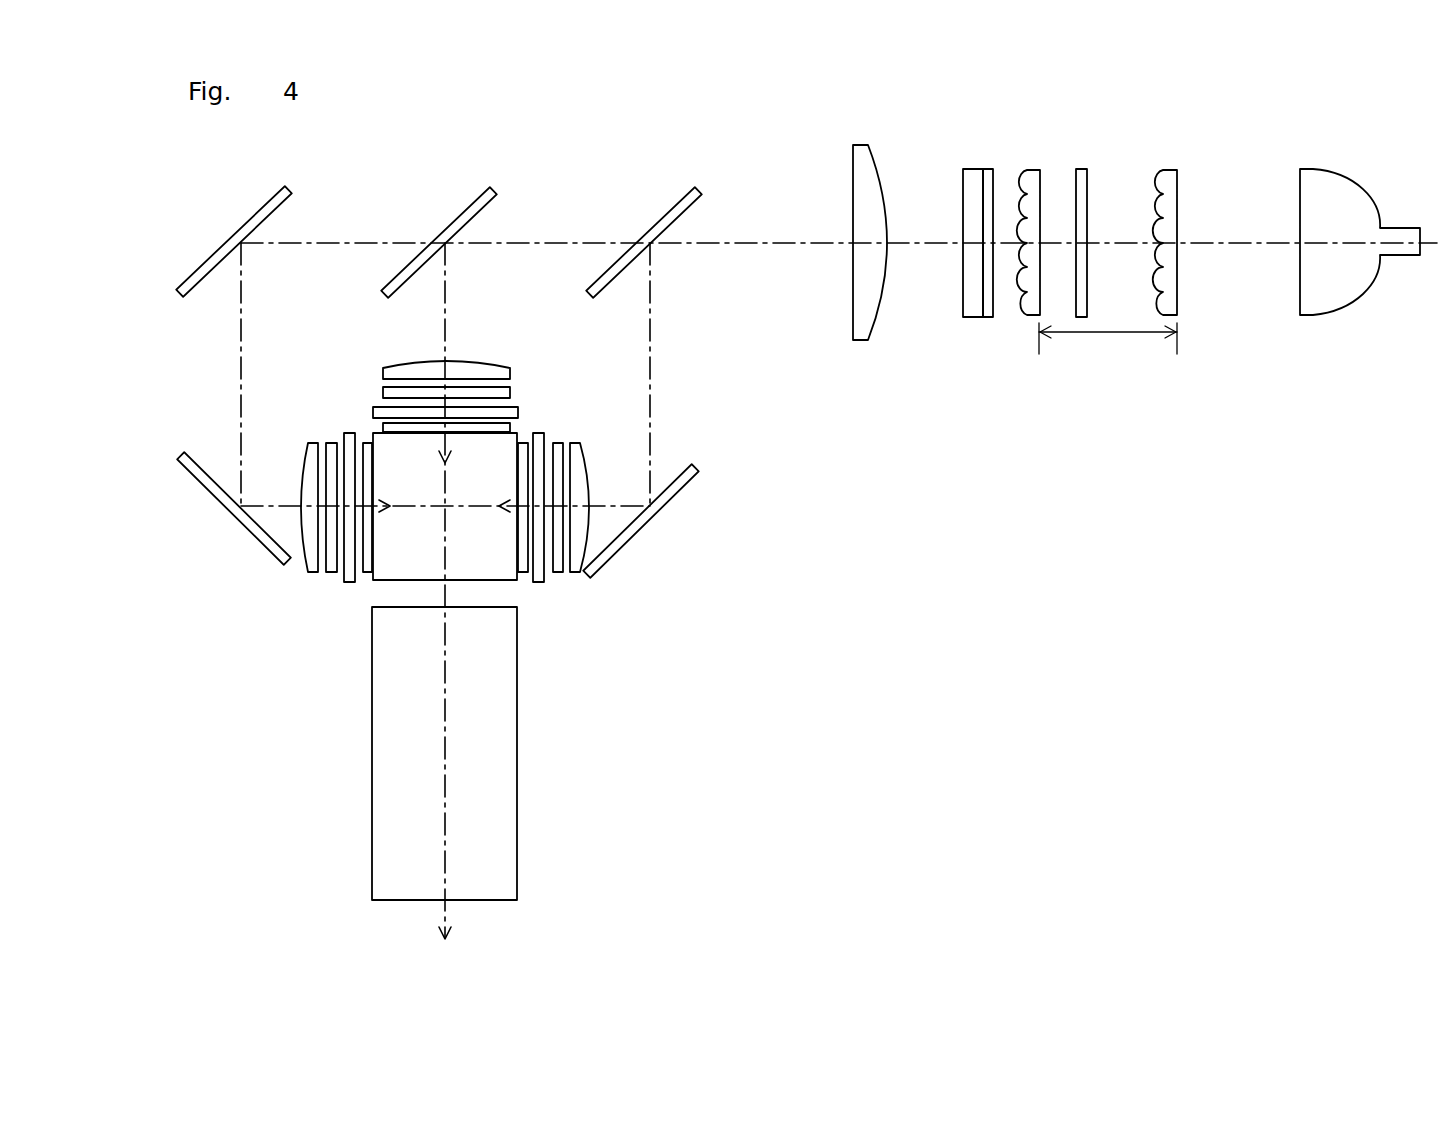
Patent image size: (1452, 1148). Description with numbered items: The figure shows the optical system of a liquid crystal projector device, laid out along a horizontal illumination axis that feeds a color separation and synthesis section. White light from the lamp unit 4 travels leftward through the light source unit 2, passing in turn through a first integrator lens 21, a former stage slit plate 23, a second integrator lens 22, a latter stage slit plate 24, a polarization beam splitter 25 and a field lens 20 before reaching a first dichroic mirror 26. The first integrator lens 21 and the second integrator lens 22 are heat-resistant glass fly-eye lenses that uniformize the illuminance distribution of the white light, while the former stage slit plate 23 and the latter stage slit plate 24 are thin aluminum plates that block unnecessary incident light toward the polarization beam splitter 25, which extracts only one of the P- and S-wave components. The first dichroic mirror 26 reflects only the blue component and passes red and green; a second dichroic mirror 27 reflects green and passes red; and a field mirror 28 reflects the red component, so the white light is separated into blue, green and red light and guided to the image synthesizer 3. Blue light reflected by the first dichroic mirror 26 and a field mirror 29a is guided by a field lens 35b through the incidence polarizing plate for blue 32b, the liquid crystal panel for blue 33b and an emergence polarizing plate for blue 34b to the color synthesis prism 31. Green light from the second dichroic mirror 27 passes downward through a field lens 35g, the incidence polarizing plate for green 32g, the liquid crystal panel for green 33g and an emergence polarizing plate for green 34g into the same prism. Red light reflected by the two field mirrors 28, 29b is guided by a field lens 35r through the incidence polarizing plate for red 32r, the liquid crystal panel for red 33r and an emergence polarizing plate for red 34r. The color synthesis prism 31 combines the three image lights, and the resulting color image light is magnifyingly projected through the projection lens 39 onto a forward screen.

The light source unit 2 is at (1020, 287).
The image synthesizer 3 is at (476, 553).
The lamp unit 4 is at (1332, 285).
The field lens 20 is at (848, 317).
The first integrator lens 21 is at (1167, 169).
The second integrator lens 22 is at (1027, 169).
The former stage slit plate 23 is at (1080, 169).
The latter stage slit plate 24 is at (983, 318).
The polarization beam splitter 25 is at (973, 169).
The first dichroic mirror 26 is at (658, 222).
The second dichroic mirror 27 is at (453, 222).
The field mirror 28 is at (247, 222).
The field mirror 29a is at (677, 497).
The field mirror 29b is at (226, 505).
The color synthesis prism 31 is at (400, 473).
The incidence polarizing plate for red 32r is at (329, 574).
The incidence polarizing plate for green 32g is at (510, 392).
The incidence polarizing plate for blue 32b is at (557, 574).
The liquid crystal panel for red 33r is at (351, 584).
The liquid crystal panel for green 33g is at (518, 415).
The liquid crystal panel for blue 33b is at (538, 584).
The emergence polarizing plate for red 34r is at (366, 574).
The emergence polarizing plate for green 34g is at (512, 428).
The emergence polarizing plate for blue 34b is at (524, 574).
The field lens 35r is at (308, 574).
The field lens 35g is at (463, 360).
The field lens 35b is at (578, 574).
The projection lens 39 is at (517, 843).